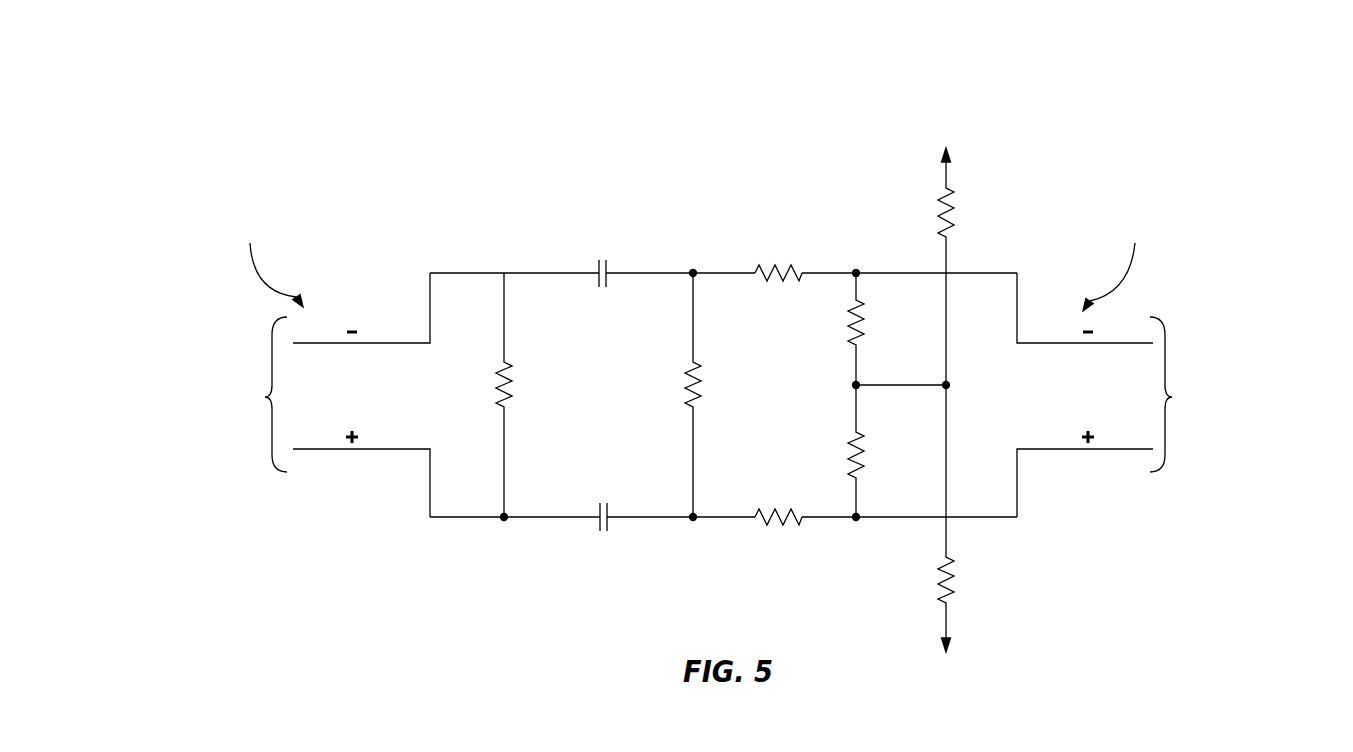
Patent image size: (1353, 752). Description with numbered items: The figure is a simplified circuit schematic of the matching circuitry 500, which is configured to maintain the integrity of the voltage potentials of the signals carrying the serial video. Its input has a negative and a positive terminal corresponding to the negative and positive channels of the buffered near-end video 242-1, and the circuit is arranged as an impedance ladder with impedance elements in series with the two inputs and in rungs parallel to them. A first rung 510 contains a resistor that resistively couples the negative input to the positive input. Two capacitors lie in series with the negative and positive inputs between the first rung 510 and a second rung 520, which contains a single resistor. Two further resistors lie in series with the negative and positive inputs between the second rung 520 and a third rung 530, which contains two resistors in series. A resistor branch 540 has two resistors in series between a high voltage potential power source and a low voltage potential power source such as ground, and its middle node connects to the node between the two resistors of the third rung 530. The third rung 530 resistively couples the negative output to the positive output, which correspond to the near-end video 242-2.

The matching circuitry 500 is at (549, 125).
The first rung 510 is at (499, 253).
The second rung 520 is at (689, 253).
The third rung 530 is at (852, 253).
The resistor branch 540 is at (914, 114).
The buffered near-end video 242-1 is at (215, 345).
The near-end video 242-2 is at (1196, 345).